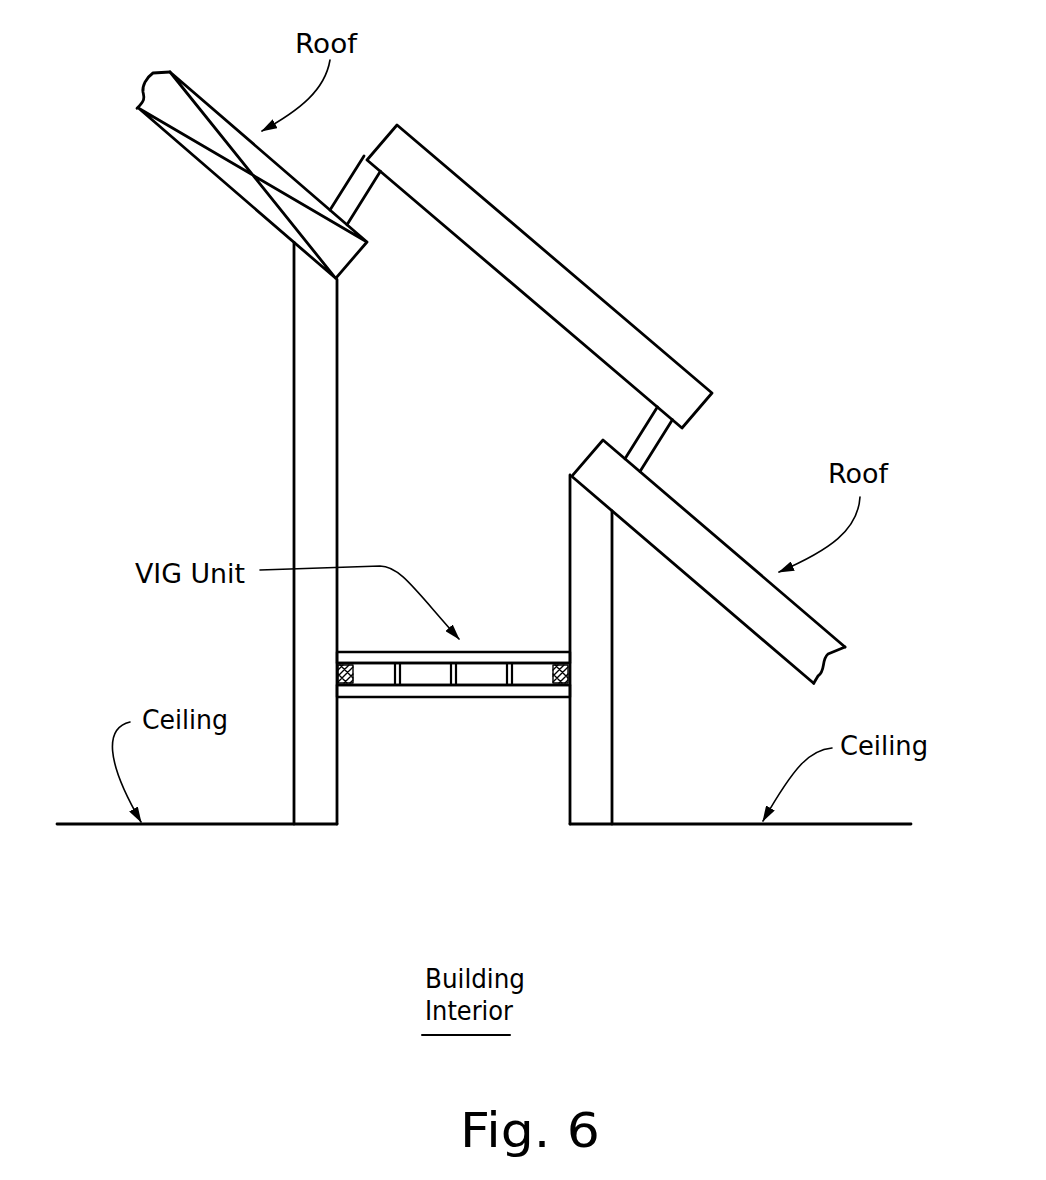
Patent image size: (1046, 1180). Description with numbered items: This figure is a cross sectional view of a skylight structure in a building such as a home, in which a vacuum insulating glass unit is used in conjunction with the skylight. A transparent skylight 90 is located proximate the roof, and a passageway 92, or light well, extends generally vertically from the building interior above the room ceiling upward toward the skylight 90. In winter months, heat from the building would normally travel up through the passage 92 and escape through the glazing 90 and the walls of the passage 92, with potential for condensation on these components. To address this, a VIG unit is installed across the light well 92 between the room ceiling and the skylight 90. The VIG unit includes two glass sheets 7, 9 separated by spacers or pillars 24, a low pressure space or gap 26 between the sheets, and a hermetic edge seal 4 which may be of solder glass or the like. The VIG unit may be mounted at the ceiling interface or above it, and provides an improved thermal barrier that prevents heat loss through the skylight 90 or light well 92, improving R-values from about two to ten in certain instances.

The skylight 90 is at (625, 345).
The passageway 92 is at (372, 381).
The glass sheet 9 is at (503, 655).
The glass sheet 7 is at (427, 693).
The low pressure space/gap 26 is at (492, 675).
The spacers or pillars 24 is at (513, 673).
The hermetic edge seal 4 is at (347, 677).